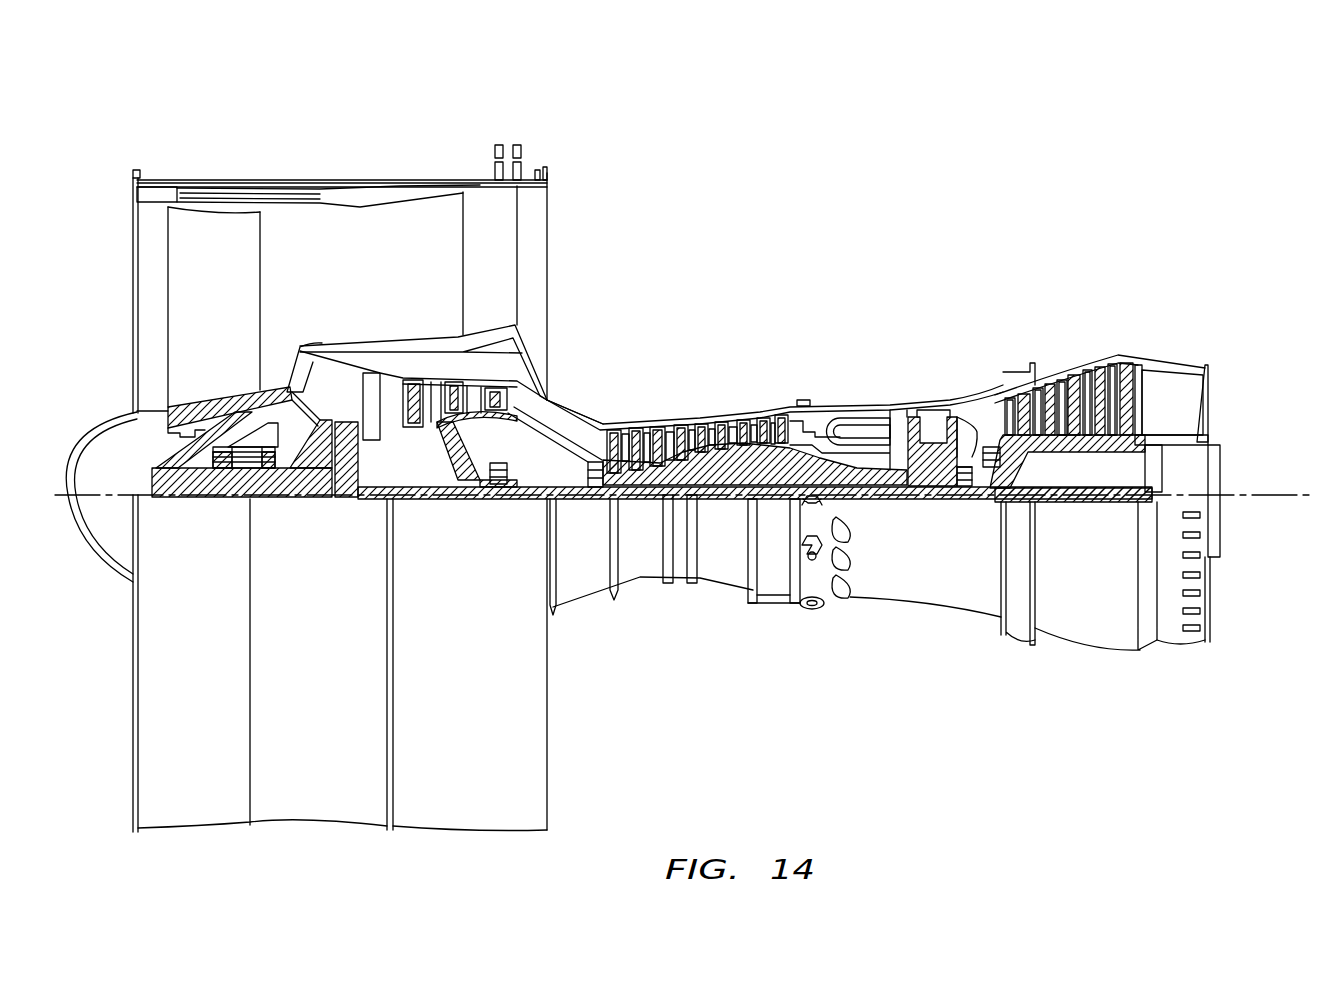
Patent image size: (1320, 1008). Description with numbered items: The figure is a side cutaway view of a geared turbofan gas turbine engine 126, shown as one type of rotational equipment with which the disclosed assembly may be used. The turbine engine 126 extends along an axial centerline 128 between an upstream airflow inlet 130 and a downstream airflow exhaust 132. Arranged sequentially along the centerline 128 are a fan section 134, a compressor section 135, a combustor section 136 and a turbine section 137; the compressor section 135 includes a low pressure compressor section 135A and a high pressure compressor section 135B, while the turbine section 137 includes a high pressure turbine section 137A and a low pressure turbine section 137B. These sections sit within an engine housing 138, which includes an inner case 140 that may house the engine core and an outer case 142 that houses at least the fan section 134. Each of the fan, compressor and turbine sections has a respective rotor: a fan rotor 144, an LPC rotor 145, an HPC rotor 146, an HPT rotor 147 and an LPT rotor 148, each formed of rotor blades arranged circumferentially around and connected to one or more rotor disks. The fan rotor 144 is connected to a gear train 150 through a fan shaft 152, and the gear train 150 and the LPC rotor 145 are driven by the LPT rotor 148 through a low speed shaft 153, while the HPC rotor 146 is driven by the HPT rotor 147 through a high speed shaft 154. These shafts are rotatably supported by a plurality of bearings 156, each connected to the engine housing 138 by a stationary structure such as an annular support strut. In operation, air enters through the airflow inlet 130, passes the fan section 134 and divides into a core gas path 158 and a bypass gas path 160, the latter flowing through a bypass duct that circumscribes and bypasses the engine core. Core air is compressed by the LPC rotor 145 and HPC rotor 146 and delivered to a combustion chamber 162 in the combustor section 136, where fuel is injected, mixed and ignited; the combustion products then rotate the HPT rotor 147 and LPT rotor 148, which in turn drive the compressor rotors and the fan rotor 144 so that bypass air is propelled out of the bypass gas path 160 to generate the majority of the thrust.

The geared turbofan gas turbine engine 126 is at (102, 160).
The axial centerline 128 is at (1272, 510).
The upstream airflow inlet 130 is at (133, 255).
The downstream airflow exhaust 132 is at (1210, 380).
The fan section 134 is at (133, 160).
The compressor section 135 is at (383, 95).
The low pressure compressor (LPC) section 135A is at (545, 143).
The high pressure compressor (HPC) section 135B is at (575, 342).
The combustor section 136 is at (905, 344).
The turbine section 137 is at (905, 272).
The high pressure turbine (HPT) section 137A is at (995, 344).
The low pressure turbine (LPT) section 137B is at (1170, 344).
The engine housing 138 is at (570, 615).
The inner case 140 is at (765, 606).
The outer case 142 is at (530, 828).
The fan rotor 144 is at (150, 422).
The LPC rotor 145 is at (447, 453).
The HPC rotor 146 is at (722, 458).
The HPT rotor 147 is at (933, 499).
The LPT rotor 148 is at (1078, 445).
The gear train 150 is at (350, 499).
The fan shaft 152 is at (202, 499).
The low speed shaft 153 is at (1083, 502).
The high speed shaft 154 is at (868, 500).
The bearings 156 is at (252, 478).
The core gas path 158 is at (574, 416).
The bypass gas path 160 is at (382, 287).
The combustion chamber 162 is at (858, 432).